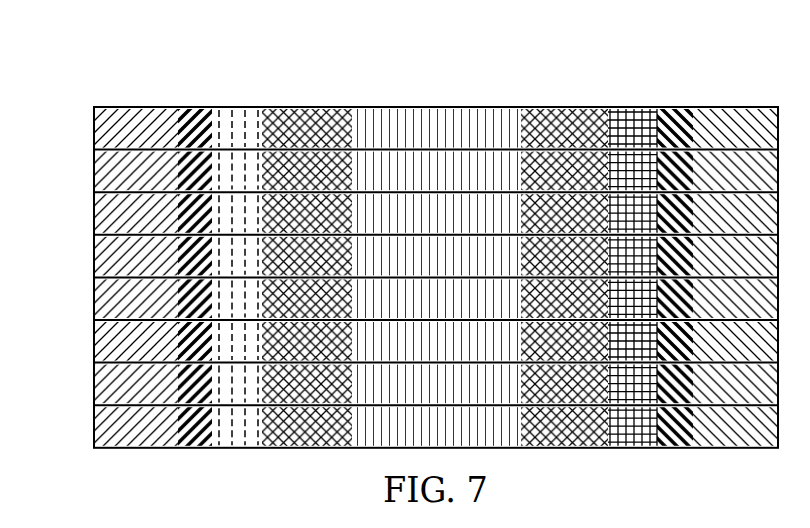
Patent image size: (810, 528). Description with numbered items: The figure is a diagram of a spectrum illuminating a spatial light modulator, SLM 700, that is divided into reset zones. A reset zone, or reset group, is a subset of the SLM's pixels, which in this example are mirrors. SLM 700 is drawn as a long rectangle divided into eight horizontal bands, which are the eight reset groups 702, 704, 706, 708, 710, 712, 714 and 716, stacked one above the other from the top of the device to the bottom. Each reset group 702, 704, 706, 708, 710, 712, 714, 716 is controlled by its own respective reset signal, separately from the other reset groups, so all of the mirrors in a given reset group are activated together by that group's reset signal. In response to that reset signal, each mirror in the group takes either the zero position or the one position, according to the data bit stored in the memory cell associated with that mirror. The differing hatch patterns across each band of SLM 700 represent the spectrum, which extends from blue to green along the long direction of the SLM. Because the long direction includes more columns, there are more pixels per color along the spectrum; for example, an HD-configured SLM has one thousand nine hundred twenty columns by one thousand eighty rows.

The SLM 700 is at (230, 60).
The reset group 702 is at (97, 128).
The reset group 704 is at (97, 171).
The reset group 706 is at (97, 214).
The reset group 708 is at (97, 256).
The reset group 710 is at (97, 299).
The reset group 712 is at (97, 341).
The reset group 714 is at (97, 384).
The reset group 716 is at (97, 426).